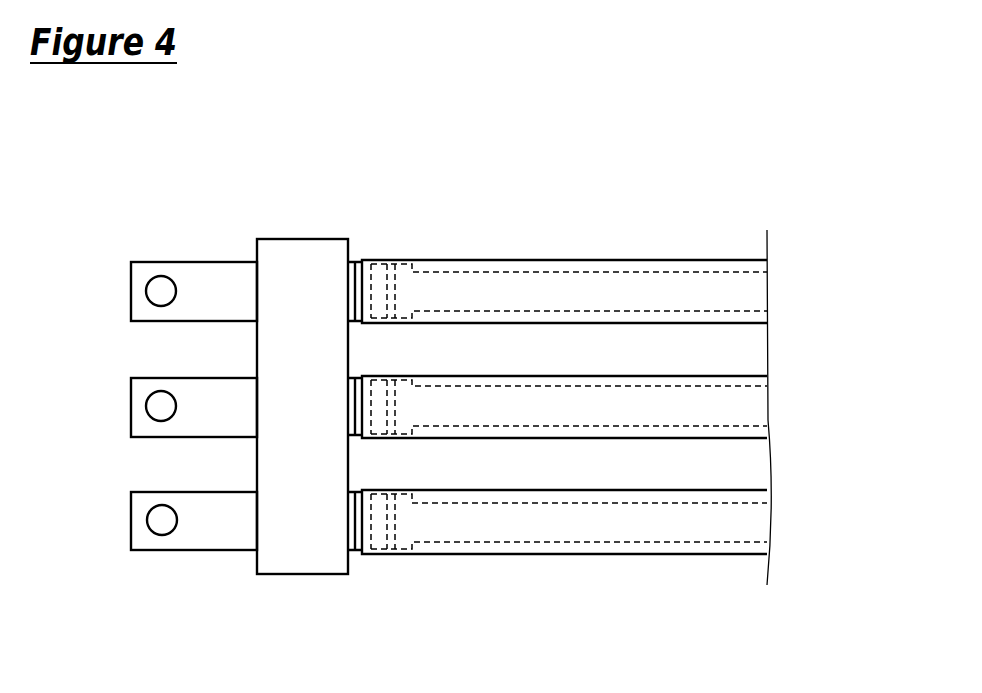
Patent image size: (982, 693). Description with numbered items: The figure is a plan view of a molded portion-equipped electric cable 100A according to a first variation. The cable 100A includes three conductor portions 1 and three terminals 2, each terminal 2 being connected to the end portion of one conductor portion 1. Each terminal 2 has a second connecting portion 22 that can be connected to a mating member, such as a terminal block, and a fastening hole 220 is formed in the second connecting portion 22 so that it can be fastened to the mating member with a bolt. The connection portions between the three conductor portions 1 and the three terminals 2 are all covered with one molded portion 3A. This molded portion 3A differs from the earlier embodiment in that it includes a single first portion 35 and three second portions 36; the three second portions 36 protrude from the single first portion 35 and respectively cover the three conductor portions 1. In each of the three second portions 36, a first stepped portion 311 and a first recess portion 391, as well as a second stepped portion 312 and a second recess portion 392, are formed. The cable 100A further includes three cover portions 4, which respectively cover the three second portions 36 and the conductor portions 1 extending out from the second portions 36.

The molded portion-equipped electric cable 100A is at (764, 145).
The conductor portion 1 is at (607, 500).
The terminal 2 is at (138, 290).
The second connecting portion 22 is at (232, 545).
The fastening hole 220 is at (163, 536).
The molded portion 3A is at (340, 239).
The first portion 35 is at (283, 239).
The second portion 36 is at (405, 490).
The first stepped portion 311 is at (372, 503).
The second stepped portion 312 is at (398, 513).
The first recess portion 391 is at (358, 553).
The second recess portion 392 is at (390, 555).
The cover portion 4 is at (757, 490).